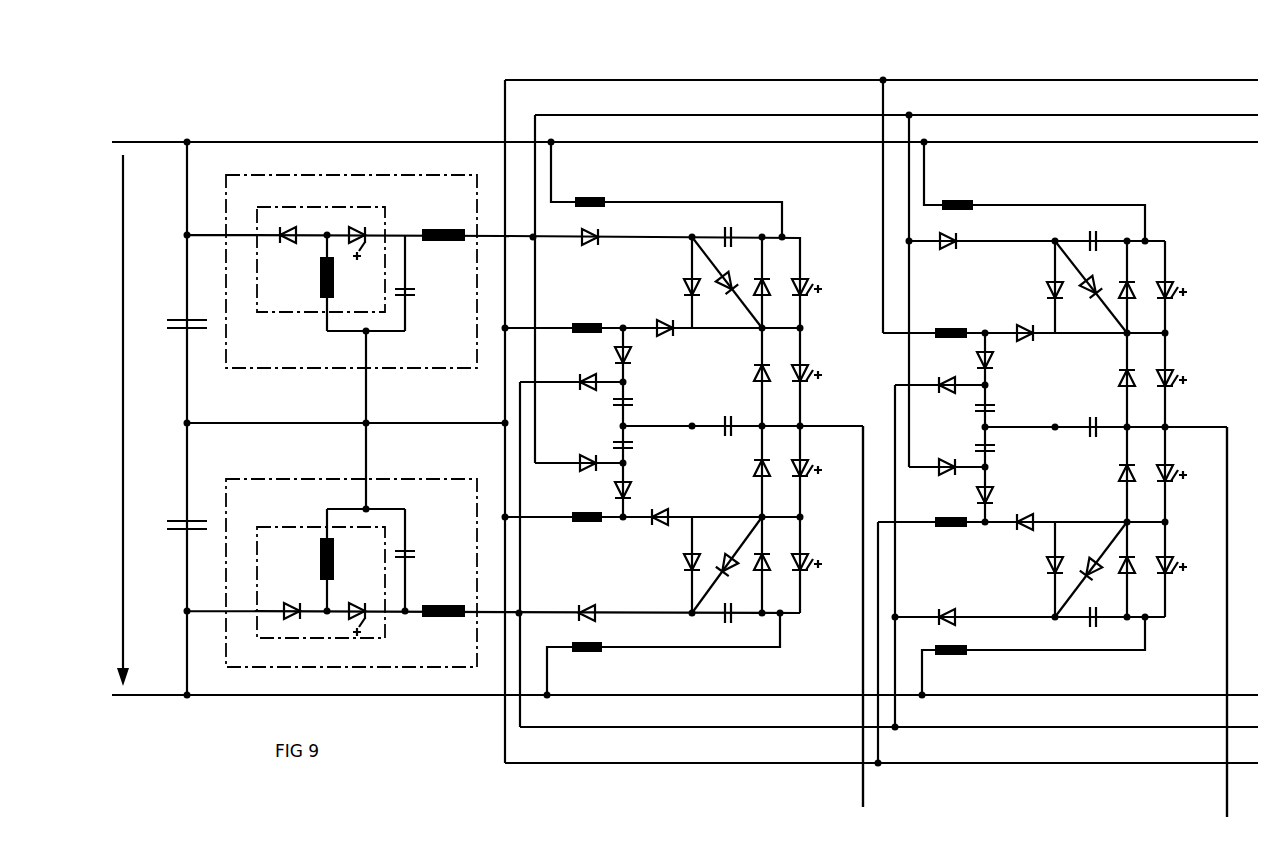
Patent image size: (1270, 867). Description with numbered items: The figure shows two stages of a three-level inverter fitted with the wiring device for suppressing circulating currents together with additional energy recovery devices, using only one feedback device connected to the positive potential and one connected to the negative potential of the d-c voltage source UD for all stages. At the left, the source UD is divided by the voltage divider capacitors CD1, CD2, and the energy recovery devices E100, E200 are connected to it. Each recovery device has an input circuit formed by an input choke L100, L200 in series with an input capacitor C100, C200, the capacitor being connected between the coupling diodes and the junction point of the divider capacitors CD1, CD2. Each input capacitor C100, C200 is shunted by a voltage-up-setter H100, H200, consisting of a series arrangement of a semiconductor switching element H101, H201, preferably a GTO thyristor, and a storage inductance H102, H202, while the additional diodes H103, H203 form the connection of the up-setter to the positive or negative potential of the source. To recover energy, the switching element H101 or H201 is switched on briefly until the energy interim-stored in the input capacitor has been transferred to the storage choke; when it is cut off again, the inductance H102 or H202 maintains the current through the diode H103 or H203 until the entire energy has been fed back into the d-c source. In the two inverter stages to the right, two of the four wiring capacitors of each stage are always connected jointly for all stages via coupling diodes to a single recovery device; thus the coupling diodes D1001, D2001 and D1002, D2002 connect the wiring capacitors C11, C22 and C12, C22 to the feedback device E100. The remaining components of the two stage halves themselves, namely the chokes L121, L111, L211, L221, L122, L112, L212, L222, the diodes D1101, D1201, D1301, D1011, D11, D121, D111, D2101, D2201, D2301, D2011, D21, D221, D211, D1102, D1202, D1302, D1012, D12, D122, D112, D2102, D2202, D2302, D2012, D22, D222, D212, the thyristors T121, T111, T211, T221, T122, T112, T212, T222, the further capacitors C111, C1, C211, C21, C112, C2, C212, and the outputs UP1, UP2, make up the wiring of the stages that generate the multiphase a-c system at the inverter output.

The d-c voltage source UD is at (125, 420).
The voltage divider capacitor CD1 is at (191, 324).
The voltage divider capacitor CD2 is at (188, 524).
The energy recovery device E100 is at (282, 172).
The energy recovery device E200 is at (232, 670).
The voltage-up-setter H100 is at (270, 206).
The voltage-up-setter H200 is at (325, 640).
The semiconductor switching element H101 is at (364, 255).
The storage inductance H102 is at (320, 291).
The additional diode H103 is at (290, 251).
The semiconductor switching element H201 is at (363, 610).
The storage inductance H202 is at (334, 556).
The additional diode H203 is at (290, 601).
The input capacitor C100 is at (409, 290).
The input capacitor C200 is at (405, 551).
The input choke L100 is at (422, 224).
The input choke L200 is at (422, 600).
The inductor L121 is at (575, 198).
The inductor L111 is at (565, 321).
The inductor L211 is at (559, 511).
The inductor L221 is at (573, 656).
The inductor L122 is at (942, 203).
The inductor L112 is at (928, 326).
The inductor L212 is at (933, 531).
The inductor L222 is at (937, 659).
The coupling diode D1001 is at (598, 231).
The diode D1101 is at (736, 260).
The diode D1201 is at (682, 280).
The diode D1301 is at (631, 355).
The diode D1011 is at (596, 376).
The diode D11 is at (680, 318).
The diode D121 is at (780, 266).
The diode D111 is at (780, 352).
The coupling diode D2001 is at (590, 607).
The diode D2101 is at (726, 570).
The diode D2201 is at (684, 567).
The diode D2301 is at (631, 485).
The diode D2011 is at (596, 456).
The diode D21 is at (660, 529).
The diode D221 is at (780, 549).
The diode D211 is at (780, 454).
The coupling diode D1002 is at (958, 235).
The diode D1102 is at (1100, 264).
The diode D1202 is at (1045, 284).
The diode D1302 is at (993, 360).
The diode D1012 is at (956, 379).
The diode D12 is at (1040, 323).
The diode D122 is at (1145, 270).
The diode D112 is at (1145, 358).
The coupling diode D2002 is at (956, 613).
The diode D2102 is at (1086, 571).
The diode D2202 is at (1048, 567).
The diode D2302 is at (993, 488).
The diode D2012 is at (954, 462).
The diode D22 is at (1030, 530).
The diode D222 is at (1145, 553).
The diode D212 is at (1145, 458).
The thyristor T121 is at (804, 269).
The thyristor T111 is at (804, 356).
The thyristor T211 is at (804, 458).
The thyristor T221 is at (804, 553).
The thyristor T122 is at (1170, 273).
The thyristor T112 is at (1170, 362).
The thyristor T212 is at (1170, 462).
The thyristor T222 is at (1170, 557).
The wiring capacitor C11 is at (733, 234).
The capacitor C111 is at (632, 398).
The capacitor C1 is at (732, 426).
The capacitor C211 is at (634, 447).
The capacitor C21 is at (731, 616).
The wiring capacitor C12 is at (1096, 238).
The capacitor C112 is at (994, 402).
The capacitor C2 is at (1097, 428).
The capacitor C212 is at (996, 450).
The wiring capacitor C22 is at (1098, 628).
The output voltage of phase 1 UP1 is at (860, 796).
The output voltage of phase 2 UP2 is at (1225, 796).